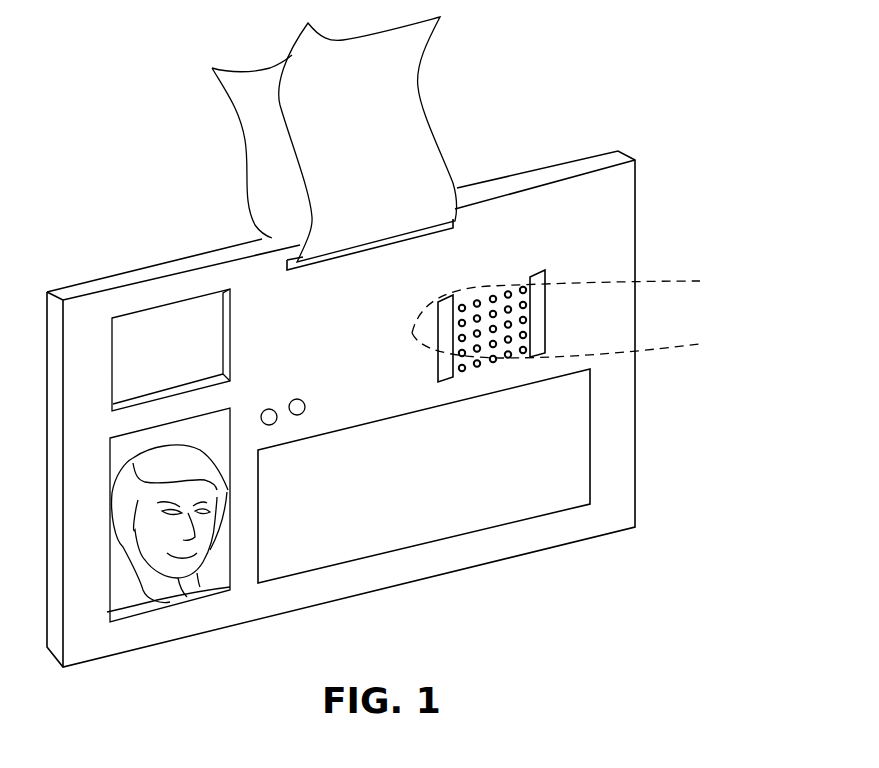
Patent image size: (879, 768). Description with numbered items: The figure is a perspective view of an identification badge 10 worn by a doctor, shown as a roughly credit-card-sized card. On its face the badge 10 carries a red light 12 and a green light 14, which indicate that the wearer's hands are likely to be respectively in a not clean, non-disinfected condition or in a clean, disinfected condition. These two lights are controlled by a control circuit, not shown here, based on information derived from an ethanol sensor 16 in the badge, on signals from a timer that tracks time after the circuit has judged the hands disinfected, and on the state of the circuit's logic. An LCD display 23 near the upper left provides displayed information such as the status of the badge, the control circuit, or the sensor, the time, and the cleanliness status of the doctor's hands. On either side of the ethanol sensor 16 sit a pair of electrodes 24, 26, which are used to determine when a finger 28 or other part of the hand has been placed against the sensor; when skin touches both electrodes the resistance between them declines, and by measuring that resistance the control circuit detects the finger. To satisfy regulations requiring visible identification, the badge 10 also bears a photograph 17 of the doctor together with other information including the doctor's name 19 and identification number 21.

The identification badge 10 is at (637, 212).
The red light 12 is at (268, 409).
The green light 14 is at (305, 406).
The ethanol sensor 16 is at (470, 272).
The photograph 17 is at (110, 537).
The doctor's name 19 is at (580, 382).
The identification number 21 is at (340, 498).
The LCD display 23 is at (203, 325).
The first electrode 24 is at (437, 379).
The second electrode 26 is at (547, 303).
The finger 28 is at (590, 282).